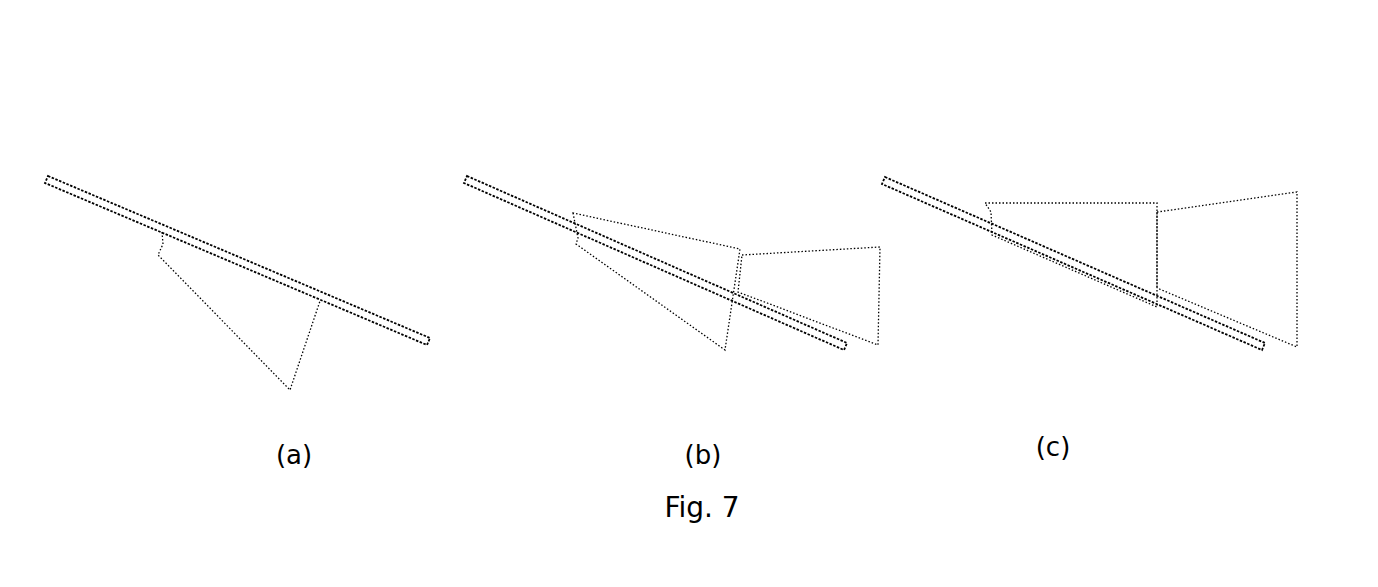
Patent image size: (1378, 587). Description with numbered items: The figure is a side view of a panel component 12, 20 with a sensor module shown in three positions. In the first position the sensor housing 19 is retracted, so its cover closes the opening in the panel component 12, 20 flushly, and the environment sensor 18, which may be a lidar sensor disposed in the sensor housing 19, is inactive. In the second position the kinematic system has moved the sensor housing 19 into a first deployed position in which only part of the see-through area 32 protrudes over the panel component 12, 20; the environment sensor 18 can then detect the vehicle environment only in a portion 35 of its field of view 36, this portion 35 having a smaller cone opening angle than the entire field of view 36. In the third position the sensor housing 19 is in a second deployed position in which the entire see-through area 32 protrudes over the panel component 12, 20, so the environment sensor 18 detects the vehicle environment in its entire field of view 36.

The panel component 12 is at (655, 206).
The panel component 20 is at (122, 208).
The second environment sensor 18 is at (657, 231).
The sensor housing 19 is at (283, 328).
The see-through area 32 is at (1158, 253).
The portion of field of view 35 is at (878, 278).
The field of view 36 is at (1295, 263).